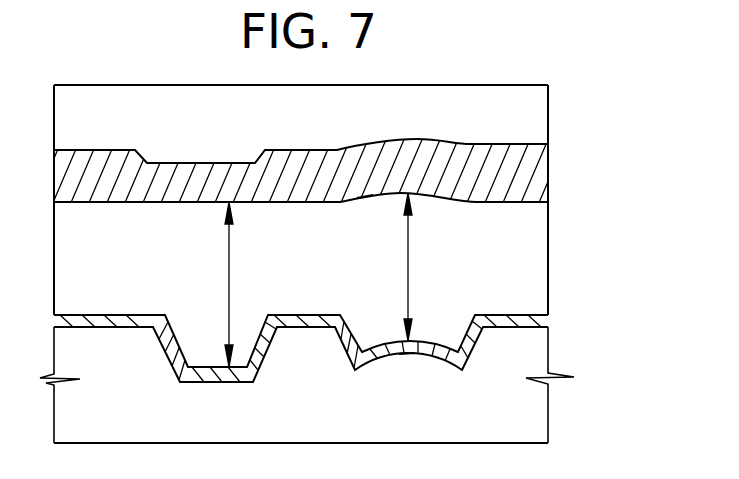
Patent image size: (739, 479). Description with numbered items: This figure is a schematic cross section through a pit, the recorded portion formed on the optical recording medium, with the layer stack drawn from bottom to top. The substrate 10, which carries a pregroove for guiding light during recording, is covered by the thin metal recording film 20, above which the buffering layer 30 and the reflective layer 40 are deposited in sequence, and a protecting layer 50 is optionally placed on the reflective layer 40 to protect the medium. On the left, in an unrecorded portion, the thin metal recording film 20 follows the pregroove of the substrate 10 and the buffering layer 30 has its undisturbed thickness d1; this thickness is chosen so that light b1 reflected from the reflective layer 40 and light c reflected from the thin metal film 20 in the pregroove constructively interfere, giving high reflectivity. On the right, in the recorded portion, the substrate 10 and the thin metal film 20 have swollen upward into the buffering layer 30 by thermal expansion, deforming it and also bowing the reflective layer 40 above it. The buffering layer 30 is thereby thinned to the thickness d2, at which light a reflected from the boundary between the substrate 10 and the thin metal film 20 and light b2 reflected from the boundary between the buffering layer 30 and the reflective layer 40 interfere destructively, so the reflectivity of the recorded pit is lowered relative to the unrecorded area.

The substrate 10 is at (535, 414).
The thin metal recording film 20 is at (543, 323).
The buffering layer 30 is at (537, 263).
The reflective layer 40 is at (534, 176).
The protecting layer 50 is at (533, 109).
The thickness of the buffering layer in an unrecorded portion d1 is at (241, 284).
The thickness of the buffering layer in a recorded portion d2 is at (423, 267).
The light reflected from the reflective layer in an unrecorded portion b1 is at (158, 203).
The light reflected from the buffering layer/reflective layer boundary in a recorded b2 is at (365, 197).
The light reflected from the substrate/thin metal film boundary a is at (407, 353).
The light reflected from the thin metal film in the pregroove c is at (197, 383).